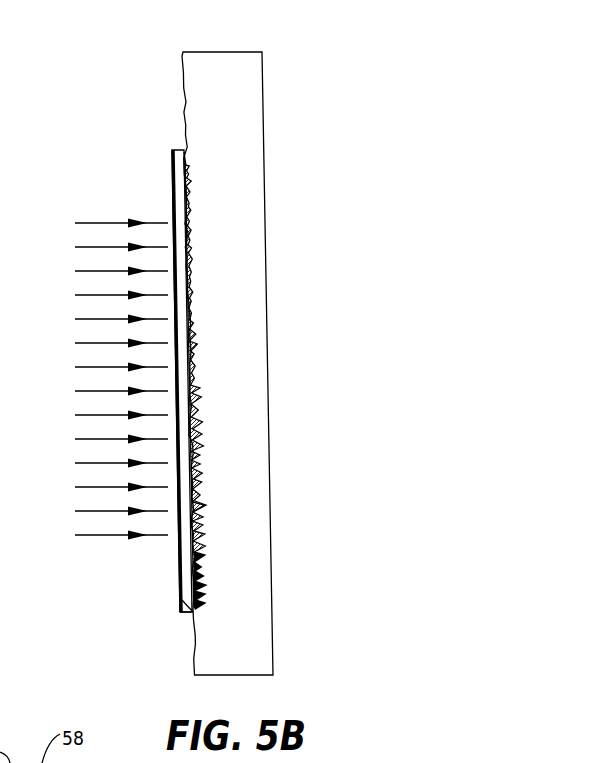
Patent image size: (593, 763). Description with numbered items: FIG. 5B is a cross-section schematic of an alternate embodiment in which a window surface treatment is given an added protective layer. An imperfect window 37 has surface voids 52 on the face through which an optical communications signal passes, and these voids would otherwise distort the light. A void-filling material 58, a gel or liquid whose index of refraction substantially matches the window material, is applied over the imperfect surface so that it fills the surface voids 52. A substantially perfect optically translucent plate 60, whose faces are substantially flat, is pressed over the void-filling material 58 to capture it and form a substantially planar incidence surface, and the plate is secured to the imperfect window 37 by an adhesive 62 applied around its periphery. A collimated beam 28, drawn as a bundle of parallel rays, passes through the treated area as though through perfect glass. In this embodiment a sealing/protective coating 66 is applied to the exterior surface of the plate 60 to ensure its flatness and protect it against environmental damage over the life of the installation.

The collimated beam 28 is at (73, 218).
The imperfect window 37 is at (254, 213).
The surface voids 52 is at (203, 349).
The void-filling material 58 is at (205, 507).
The substantially perfect optically translucent plate 60 is at (171, 151).
The adhesive 62 is at (188, 170).
The sealing/protective coating 66 is at (181, 612).